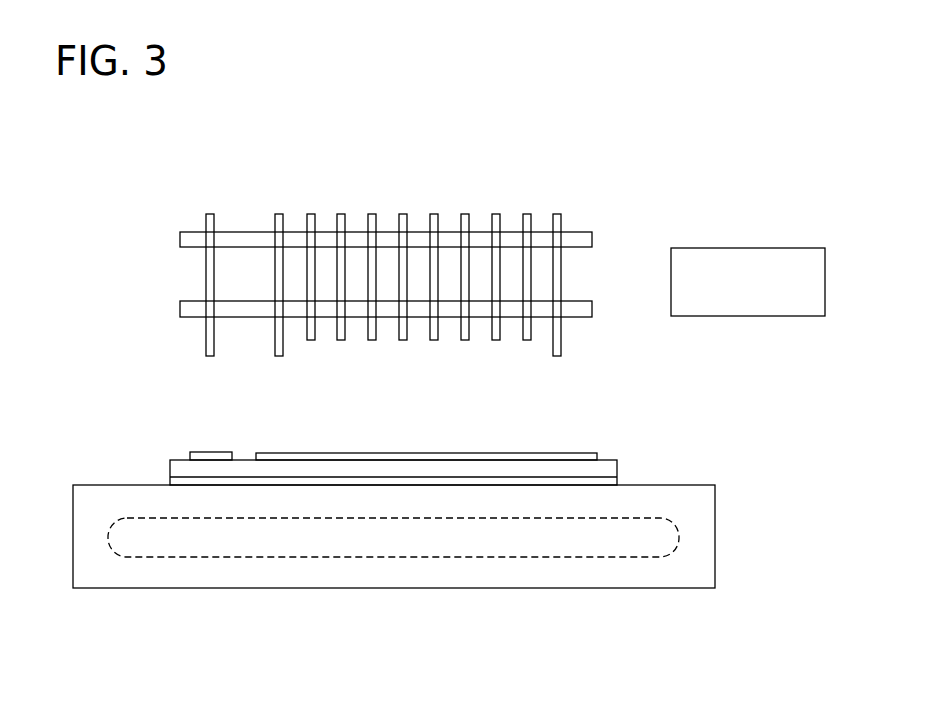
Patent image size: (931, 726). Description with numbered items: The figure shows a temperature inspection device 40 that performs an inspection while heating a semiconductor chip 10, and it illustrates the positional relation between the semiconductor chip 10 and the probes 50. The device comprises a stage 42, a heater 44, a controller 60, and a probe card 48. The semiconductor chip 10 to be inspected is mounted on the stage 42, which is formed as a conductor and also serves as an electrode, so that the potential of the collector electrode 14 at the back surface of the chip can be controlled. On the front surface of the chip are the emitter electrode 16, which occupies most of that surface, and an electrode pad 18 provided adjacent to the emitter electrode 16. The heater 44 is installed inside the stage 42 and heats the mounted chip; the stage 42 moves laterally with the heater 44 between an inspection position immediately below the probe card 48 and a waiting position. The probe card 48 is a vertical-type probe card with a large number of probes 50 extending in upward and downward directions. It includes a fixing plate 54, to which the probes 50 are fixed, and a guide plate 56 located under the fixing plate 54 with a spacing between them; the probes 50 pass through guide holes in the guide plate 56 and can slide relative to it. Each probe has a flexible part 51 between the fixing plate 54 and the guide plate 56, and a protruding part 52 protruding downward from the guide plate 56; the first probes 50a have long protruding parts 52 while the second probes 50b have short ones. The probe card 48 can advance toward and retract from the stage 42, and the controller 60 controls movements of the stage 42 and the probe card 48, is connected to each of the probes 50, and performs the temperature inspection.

The semiconductor chip 10 is at (635, 455).
The collector electrode 14 is at (185, 485).
The emitter electrode 16 is at (553, 455).
The electrode pad 18 is at (212, 457).
The temperature inspection device 40 is at (122, 160).
The stage 42 is at (715, 518).
The heater 44 is at (627, 558).
The probe card 48 is at (190, 183).
The probes 50 is at (595, 148).
The first probes 50a is at (279, 214).
The second probes 50b is at (527, 214).
The flexible part 51 is at (311, 272).
The protruding part 52 is at (311, 340).
The fixing plate 54 is at (180, 235).
The guide plate 56 is at (180, 309).
The controller 60 is at (800, 253).